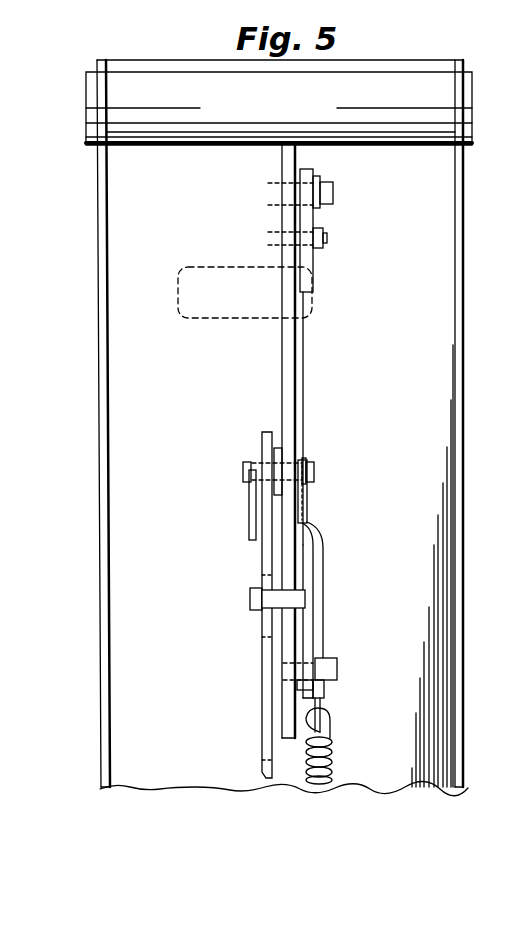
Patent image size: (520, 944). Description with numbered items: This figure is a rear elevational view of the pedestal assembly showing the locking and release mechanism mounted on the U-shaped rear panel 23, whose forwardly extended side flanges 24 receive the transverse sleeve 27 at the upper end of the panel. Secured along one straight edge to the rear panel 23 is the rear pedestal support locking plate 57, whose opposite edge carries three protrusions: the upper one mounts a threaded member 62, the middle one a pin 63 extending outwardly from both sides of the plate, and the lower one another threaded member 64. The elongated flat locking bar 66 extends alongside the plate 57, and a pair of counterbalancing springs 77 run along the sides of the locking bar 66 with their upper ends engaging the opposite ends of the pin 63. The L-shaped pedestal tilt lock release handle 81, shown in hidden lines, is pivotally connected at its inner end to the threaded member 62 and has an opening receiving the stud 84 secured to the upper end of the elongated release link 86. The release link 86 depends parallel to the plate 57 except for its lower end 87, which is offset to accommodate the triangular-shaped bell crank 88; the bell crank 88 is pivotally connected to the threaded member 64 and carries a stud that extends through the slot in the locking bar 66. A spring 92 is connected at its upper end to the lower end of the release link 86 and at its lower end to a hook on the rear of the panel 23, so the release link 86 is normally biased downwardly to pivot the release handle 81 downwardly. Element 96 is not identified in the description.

The rear panel 23 is at (173, 428).
The side flanges 24 is at (97, 352).
The transverse sleeve 27 is at (95, 147).
The rear pedestal support locking plate 57 is at (282, 357).
The threaded member 62 is at (333, 193).
The pin 63 is at (314, 468).
The threaded member 64 is at (338, 673).
The locking bar 66 is at (262, 672).
The counterbalancing springs 77 is at (250, 511).
The pedestal tilt lock release handle 81 is at (178, 286).
The stud 84 is at (327, 237).
The release link 86 is at (304, 333).
The lower end of release link 87 is at (324, 549).
The bell crank 88 is at (308, 627).
The spring 92 is at (338, 752).
The bolt 96 is at (250, 598).